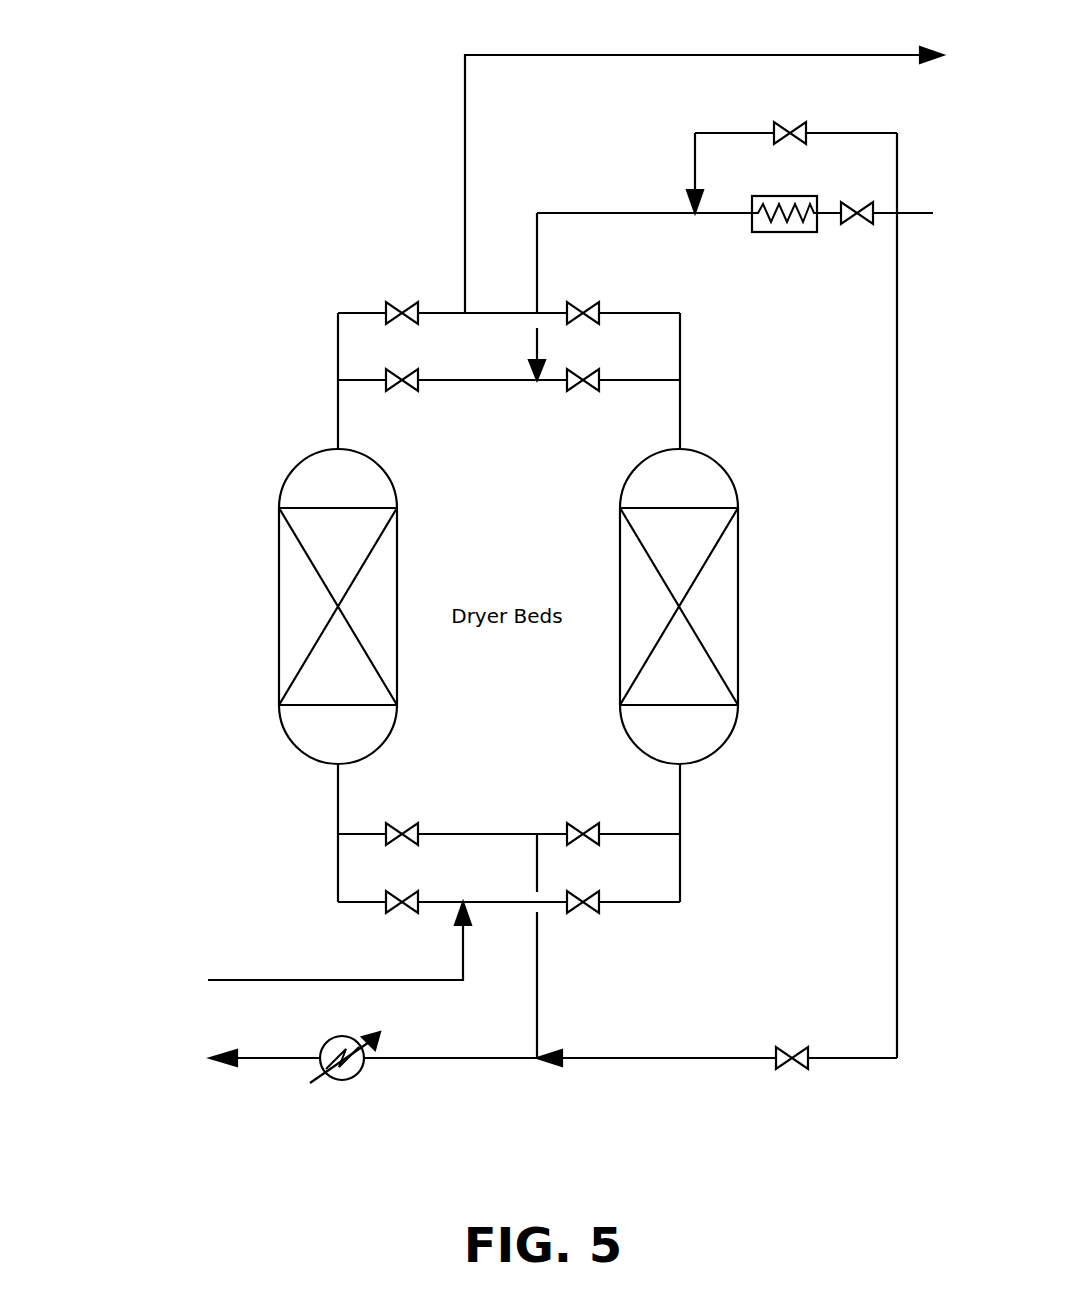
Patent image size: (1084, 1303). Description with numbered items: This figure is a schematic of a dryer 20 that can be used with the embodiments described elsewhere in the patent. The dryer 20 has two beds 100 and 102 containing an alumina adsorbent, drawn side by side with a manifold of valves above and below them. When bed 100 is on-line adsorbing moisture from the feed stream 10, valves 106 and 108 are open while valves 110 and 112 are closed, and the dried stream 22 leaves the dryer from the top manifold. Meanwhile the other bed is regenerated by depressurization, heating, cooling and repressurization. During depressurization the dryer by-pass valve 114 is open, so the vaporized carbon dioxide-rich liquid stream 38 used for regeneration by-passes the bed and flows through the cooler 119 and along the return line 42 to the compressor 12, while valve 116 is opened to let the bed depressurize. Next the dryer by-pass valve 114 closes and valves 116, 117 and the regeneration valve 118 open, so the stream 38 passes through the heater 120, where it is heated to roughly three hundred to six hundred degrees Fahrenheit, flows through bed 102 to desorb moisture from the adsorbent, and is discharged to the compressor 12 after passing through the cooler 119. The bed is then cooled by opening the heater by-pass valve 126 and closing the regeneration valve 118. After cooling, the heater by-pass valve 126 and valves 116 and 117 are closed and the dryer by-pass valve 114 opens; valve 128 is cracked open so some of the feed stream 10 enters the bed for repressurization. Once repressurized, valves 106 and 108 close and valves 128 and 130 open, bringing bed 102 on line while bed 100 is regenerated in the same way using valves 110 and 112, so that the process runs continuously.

The feed stream 10 is at (250, 978).
The compressor 12 is at (124, 1066).
The dryer 20 is at (198, 325).
The dried stream 22 is at (798, 55).
The vaporized carbon dioxide-rich liquid stream 38 is at (915, 214).
The return line to compressor 42 is at (260, 1063).
The bed 100 is at (287, 609).
The bed 102 is at (630, 568).
The valve 106 is at (390, 905).
The valve 108 is at (390, 308).
The valve 110 is at (412, 832).
The valve 112 is at (412, 388).
The dryer by-pass valve 114 is at (795, 1048).
The valve 116 is at (573, 828).
The valve 117 is at (573, 388).
The regeneration valve 118 is at (843, 204).
The cooler 119 is at (342, 1038).
The heater 120 is at (775, 232).
The heater by-pass valve 126 is at (806, 133).
The valve 128 is at (593, 908).
The valve 130 is at (587, 306).